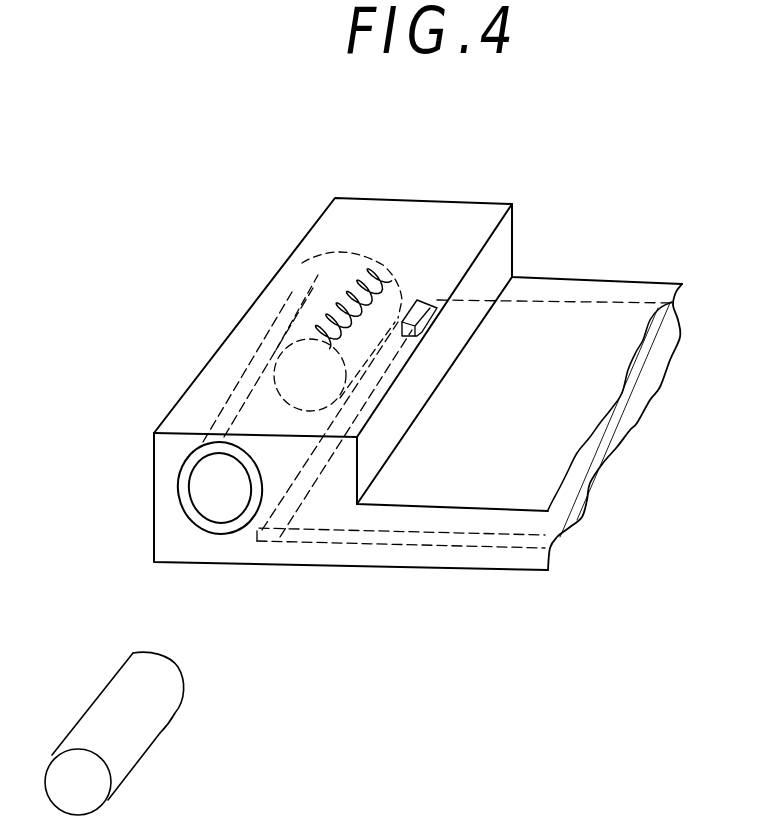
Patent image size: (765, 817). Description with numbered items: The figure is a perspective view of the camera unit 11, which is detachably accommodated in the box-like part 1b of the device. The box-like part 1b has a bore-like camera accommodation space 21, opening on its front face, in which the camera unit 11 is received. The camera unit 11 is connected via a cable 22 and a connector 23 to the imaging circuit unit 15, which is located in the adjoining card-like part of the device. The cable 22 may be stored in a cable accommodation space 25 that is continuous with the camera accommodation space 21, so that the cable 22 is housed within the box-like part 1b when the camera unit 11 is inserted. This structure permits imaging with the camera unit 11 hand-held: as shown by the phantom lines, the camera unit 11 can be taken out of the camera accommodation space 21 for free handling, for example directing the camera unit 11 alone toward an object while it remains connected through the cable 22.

The box-like part 1b is at (335, 165).
The camera unit 11 is at (262, 388).
The imaging circuit unit 15 is at (583, 316).
The camera accommodation space 21 is at (217, 425).
The cable 22 is at (275, 294).
The connector 23 is at (426, 310).
The cable accommodation space 25 is at (312, 278).